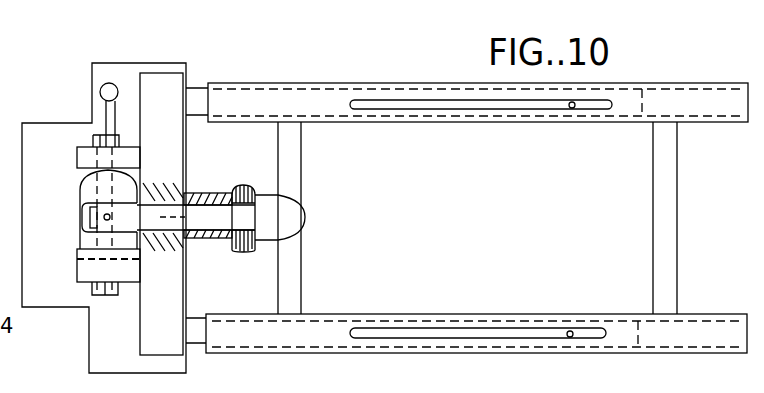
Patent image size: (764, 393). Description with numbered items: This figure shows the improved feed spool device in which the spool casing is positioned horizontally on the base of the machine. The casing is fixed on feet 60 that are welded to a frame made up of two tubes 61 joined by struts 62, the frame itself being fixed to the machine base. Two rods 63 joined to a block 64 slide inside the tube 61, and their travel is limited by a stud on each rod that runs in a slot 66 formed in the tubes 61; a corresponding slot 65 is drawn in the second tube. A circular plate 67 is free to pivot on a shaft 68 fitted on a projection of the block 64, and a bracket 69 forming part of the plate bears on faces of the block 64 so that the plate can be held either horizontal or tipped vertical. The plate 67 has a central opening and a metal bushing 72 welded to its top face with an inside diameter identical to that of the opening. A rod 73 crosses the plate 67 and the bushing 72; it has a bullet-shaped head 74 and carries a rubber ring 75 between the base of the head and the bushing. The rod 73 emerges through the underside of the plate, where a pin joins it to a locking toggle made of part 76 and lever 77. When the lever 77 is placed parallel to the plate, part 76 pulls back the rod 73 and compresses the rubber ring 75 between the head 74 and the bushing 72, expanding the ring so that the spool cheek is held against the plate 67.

The feet 60 is at (398, 0).
The tubes 61 is at (721, 124).
The struts 62 is at (656, 186).
The rods 63 is at (198, 97).
The block 64 is at (122, 66).
The slot in lower rail 65 is at (568, 330).
The slot 66 is at (452, 123).
The circular plate 67 is at (176, 163).
The shaft 68 is at (97, 240).
The bracket 69 is at (77, 253).
The metal bushing 72 is at (204, 243).
The rod 73 is at (197, 210).
The bullet-shaped head 74 is at (300, 207).
The rubber ring 75 is at (246, 253).
The locking toggle part 76 is at (83, 178).
The lever 77 is at (109, 112).